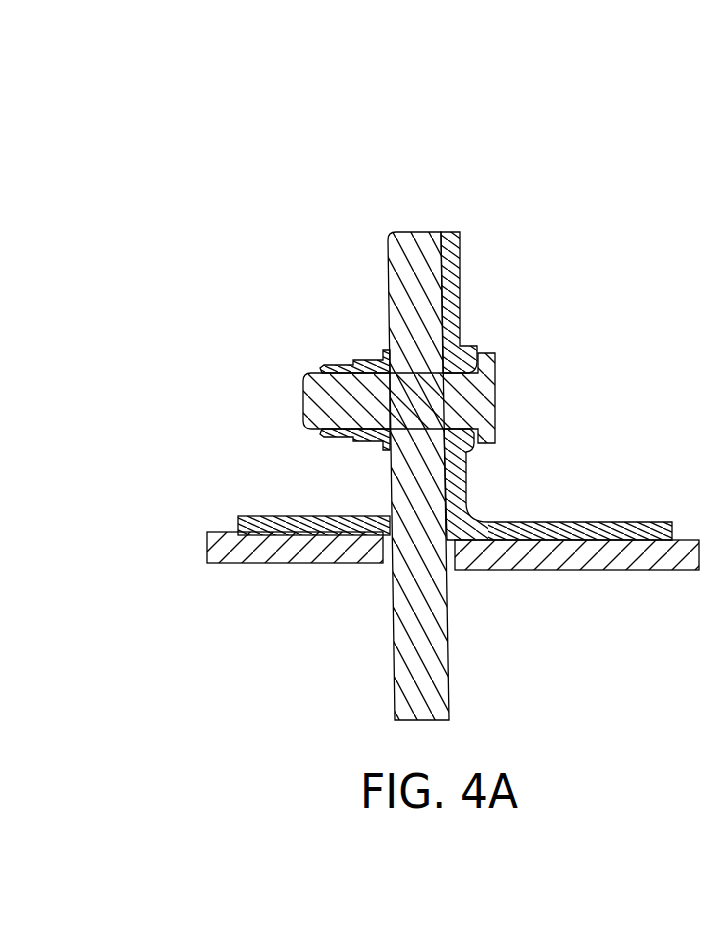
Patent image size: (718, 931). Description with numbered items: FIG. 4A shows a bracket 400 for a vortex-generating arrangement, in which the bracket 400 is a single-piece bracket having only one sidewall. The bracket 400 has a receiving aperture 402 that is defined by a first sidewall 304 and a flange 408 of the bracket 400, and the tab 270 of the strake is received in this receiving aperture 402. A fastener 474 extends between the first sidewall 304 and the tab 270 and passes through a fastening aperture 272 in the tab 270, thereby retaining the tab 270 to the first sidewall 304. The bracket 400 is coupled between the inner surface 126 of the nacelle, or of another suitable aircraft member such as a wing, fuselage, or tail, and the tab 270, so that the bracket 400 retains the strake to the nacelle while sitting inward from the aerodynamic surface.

The bracket 400 is at (512, 172).
The tab 270 is at (413, 253).
The first sidewall 304 is at (459, 285).
The fastening aperture 272 is at (413, 372).
The fastener 474 is at (487, 392).
The flange 408 is at (280, 515).
The inner surface 126 is at (222, 532).
The receiving aperture 402 is at (387, 515).